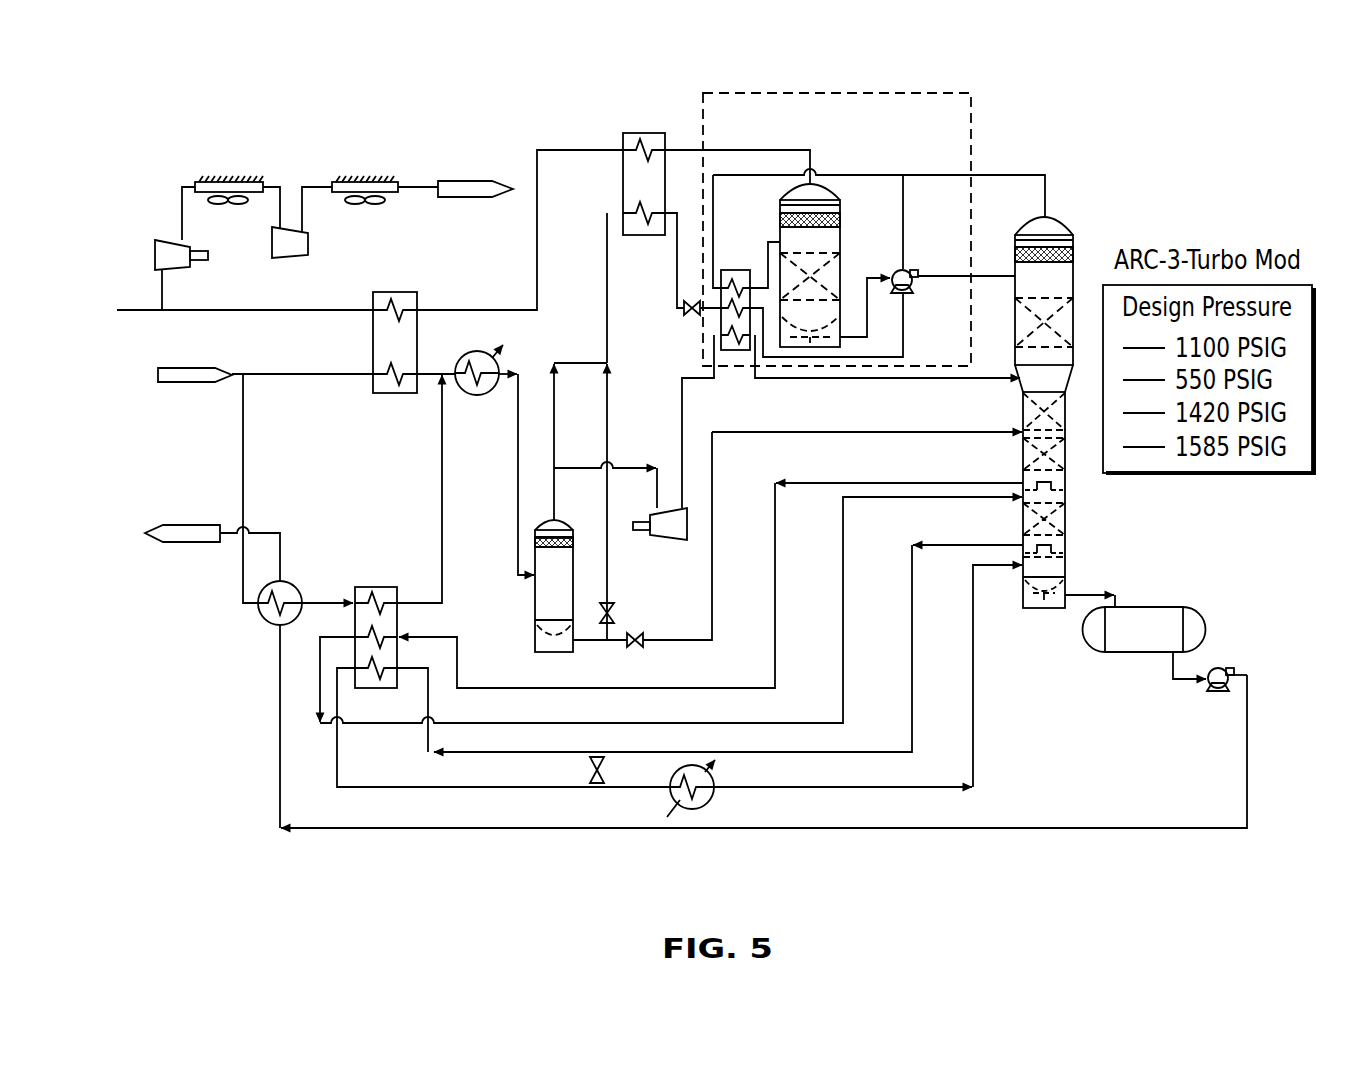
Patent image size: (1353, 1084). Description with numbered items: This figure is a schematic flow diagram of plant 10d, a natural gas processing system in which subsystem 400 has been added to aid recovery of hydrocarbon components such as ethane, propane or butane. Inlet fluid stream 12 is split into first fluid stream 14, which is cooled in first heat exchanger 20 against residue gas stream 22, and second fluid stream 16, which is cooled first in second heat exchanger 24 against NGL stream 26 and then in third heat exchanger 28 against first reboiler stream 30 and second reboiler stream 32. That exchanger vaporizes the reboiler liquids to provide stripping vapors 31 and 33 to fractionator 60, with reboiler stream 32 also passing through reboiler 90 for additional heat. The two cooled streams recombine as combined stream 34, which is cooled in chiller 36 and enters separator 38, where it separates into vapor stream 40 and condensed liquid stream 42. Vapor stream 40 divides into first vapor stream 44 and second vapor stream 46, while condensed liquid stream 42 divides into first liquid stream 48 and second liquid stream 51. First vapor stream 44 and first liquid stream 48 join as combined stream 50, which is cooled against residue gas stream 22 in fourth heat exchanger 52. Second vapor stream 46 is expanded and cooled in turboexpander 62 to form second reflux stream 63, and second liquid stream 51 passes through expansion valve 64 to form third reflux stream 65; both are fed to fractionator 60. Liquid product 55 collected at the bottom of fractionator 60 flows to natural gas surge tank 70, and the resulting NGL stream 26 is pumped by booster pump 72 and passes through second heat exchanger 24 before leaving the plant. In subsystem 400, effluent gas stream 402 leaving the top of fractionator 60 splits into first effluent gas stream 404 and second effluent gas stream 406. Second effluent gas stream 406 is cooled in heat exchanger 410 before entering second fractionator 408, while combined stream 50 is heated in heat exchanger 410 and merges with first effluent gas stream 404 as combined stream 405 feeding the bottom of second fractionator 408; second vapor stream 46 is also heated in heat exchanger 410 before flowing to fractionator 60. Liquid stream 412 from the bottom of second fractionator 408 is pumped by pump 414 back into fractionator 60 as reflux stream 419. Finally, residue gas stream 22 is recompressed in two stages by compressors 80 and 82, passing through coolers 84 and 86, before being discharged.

The plant 10d is at (1118, 79).
The inlet fluid stream 12 is at (172, 368).
The first fluid stream 14 is at (330, 374).
The second fluid stream 16 is at (243, 465).
The first heat exchanger 20 is at (400, 292).
The residue gas stream 22 is at (458, 197).
The second heat exchanger 24 is at (270, 623).
The NGL stream 26 is at (182, 525).
The third heat exchanger 28 is at (355, 592).
The first reboiler stream 30 is at (920, 483).
The stripping vapor 31 is at (925, 497).
The second reboiler stream 32 is at (490, 752).
The stripping vapor 33 is at (975, 700).
The combined stream 34 is at (445, 374).
The chiller 36 is at (462, 390).
The separator 38 is at (535, 610).
The vapor stream 40 is at (557, 505).
The condensed liquid stream 42 is at (588, 643).
The first vapor stream 44 is at (558, 408).
The second vapor stream 46 is at (588, 468).
The first liquid stream 48 is at (608, 430).
The combined stream 50 is at (607, 290).
The second liquid stream 51 is at (712, 615).
The fourth heat exchanger 52 is at (640, 133).
The liquid product 55 is at (1095, 592).
The fractionator 60 is at (1075, 245).
The turboexpander 62 is at (655, 515).
The second reflux stream 63 is at (955, 378).
The expansion valve 64 is at (640, 646).
The third reflux stream 65 is at (895, 432).
The natural gas surge tank 70 is at (1150, 607).
The booster pump 72 is at (1225, 668).
The compressor 80 is at (160, 240).
The compressor 82 is at (308, 245).
The cooler 84 is at (195, 182).
The cooler 86 is at (332, 182).
The reboiler 90 is at (690, 810).
The subsystem 400 is at (888, 91).
The effluent gas stream 402 is at (1045, 195).
The first effluent gas stream 404 is at (905, 225).
The combined stream 405 is at (765, 312).
The second effluent gas stream 406 is at (860, 175).
The second fractionator 408 is at (780, 210).
The heat exchanger 410 is at (733, 270).
The liquid stream 412 is at (847, 335).
The pump 414 is at (893, 268).
The reflux stream 419 is at (950, 278).